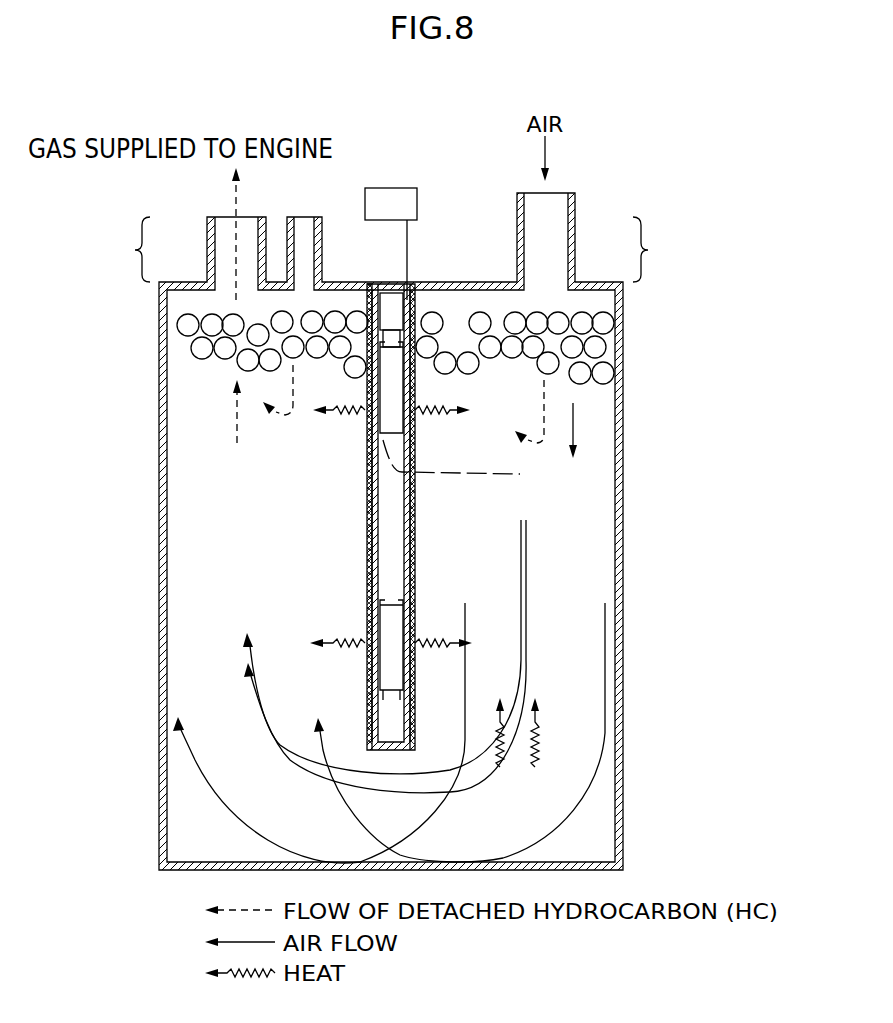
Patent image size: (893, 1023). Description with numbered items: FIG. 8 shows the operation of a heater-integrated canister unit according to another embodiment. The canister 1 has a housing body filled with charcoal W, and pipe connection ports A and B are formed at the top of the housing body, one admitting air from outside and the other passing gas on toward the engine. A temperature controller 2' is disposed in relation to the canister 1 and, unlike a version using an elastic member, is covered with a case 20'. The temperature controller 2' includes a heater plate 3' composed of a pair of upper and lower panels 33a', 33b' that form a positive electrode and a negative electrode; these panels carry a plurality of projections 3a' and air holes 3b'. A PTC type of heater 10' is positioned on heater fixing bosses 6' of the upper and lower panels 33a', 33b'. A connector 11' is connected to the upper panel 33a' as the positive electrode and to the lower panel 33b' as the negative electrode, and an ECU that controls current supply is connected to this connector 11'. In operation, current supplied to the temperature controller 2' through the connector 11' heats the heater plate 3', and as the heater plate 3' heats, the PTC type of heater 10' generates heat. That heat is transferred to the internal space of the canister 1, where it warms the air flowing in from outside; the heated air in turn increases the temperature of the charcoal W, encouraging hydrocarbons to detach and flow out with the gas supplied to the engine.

The canister 1 is at (160, 393).
The temperature controller 2' is at (232, 530).
The heater plate 3' is at (424, 470).
The projections 3a' is at (559, 509).
The air holes 3b' is at (559, 540).
The heater fixing bosses 6' is at (530, 463).
The PTC type heater 10' is at (388, 496).
The connector 11' is at (391, 216).
The case 20' is at (227, 606).
The upper panel 33a' is at (460, 487).
The lower panel 33b' is at (413, 487).
The charcoal W is at (185, 325).
The pipe connection port A is at (652, 249).
The pipe connection port B is at (131, 249).